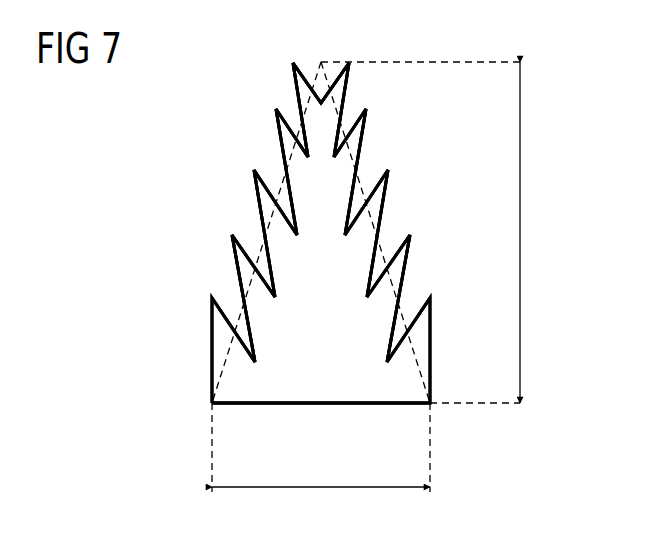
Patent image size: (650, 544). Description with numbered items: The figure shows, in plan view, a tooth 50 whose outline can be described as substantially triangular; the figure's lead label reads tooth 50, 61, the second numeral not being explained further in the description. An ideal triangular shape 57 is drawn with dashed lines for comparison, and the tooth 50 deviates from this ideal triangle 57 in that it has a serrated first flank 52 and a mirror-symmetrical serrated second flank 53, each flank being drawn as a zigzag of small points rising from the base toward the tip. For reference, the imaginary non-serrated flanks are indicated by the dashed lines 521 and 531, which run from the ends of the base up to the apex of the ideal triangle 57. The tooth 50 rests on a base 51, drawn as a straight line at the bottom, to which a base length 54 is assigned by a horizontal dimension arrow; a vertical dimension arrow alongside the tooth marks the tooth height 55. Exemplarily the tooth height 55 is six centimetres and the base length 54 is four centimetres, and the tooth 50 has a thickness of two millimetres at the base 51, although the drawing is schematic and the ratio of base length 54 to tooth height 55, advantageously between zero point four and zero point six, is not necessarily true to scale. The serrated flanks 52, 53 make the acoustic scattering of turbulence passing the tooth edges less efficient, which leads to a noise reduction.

The tooth 50 is at (148, 246).
The tooth structure 61 is at (251, 233).
The base 51 is at (345, 404).
The serrated first flank 52 is at (232, 196).
The serrated second flank 53 is at (413, 196).
The base length 54 is at (322, 485).
The tooth height 55 is at (520, 212).
The ideal triangular shape 57 is at (321, 62).
The dashed line indicating imaginary non-serrated first flank 521 is at (223, 358).
The dashed line indicating imaginary non-serrated second flank 531 is at (403, 318).